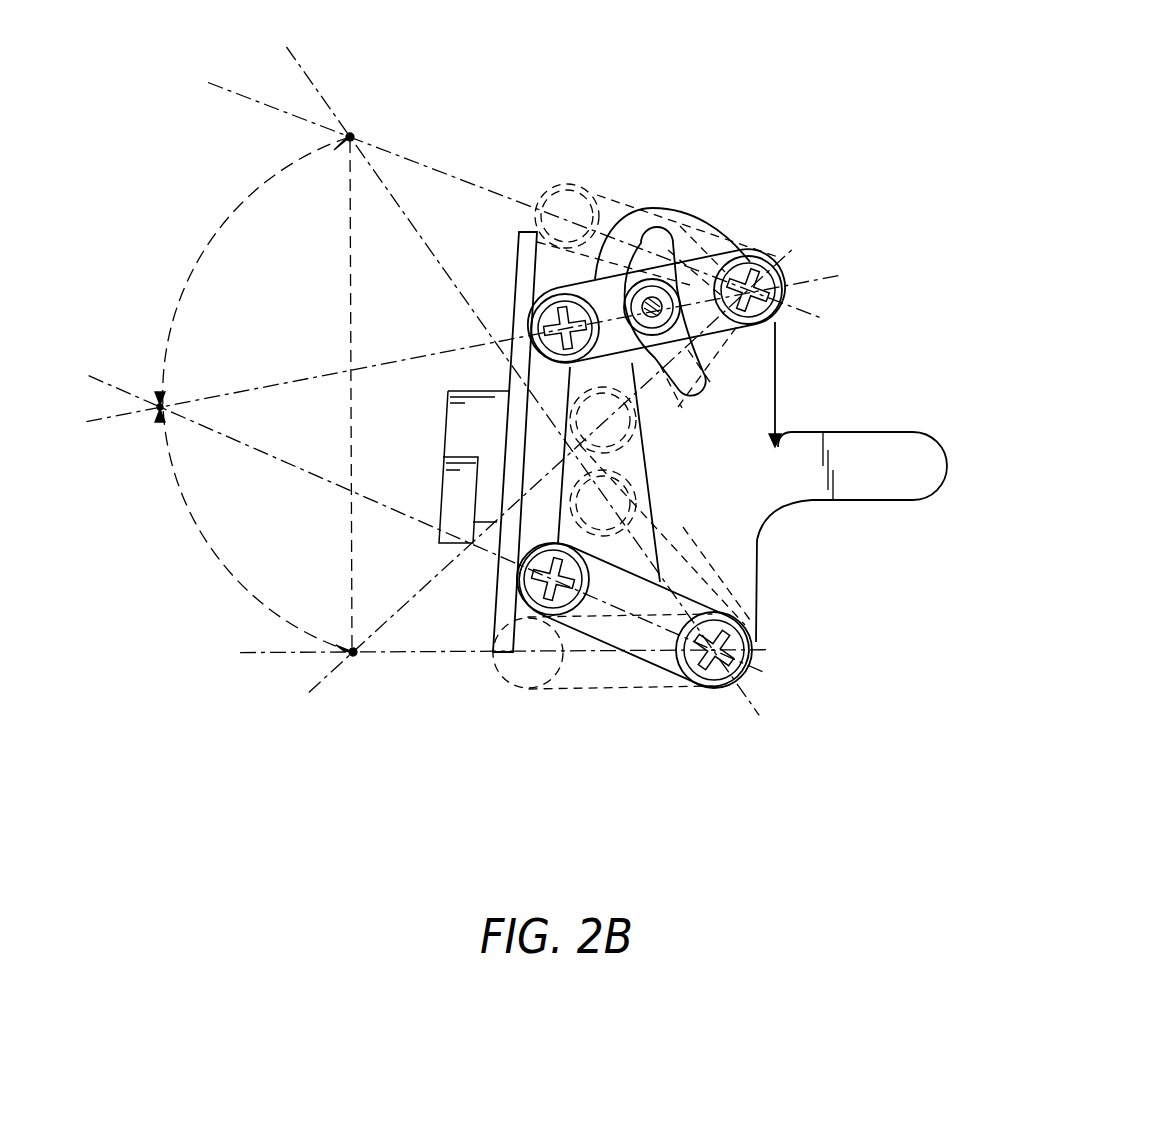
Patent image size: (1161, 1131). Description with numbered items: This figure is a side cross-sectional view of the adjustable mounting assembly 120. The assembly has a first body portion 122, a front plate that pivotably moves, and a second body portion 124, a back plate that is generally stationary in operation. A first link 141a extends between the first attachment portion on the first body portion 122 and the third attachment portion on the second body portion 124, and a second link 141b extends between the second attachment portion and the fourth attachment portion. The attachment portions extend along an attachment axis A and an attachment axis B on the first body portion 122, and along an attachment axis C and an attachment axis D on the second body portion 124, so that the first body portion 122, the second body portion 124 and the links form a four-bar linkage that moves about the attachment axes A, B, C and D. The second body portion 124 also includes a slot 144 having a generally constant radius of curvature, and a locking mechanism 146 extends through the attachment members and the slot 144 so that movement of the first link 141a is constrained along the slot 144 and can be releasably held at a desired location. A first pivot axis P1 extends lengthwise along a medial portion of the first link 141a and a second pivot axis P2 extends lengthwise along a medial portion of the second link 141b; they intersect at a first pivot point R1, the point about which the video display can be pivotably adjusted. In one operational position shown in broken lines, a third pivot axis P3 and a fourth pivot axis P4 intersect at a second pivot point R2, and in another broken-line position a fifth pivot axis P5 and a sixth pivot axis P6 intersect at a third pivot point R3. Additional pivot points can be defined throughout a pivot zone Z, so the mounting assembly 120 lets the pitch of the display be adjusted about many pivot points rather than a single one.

The adjustable mounting assembly 120 is at (742, 77).
The first body portion 122 is at (548, 383).
The second body portion 124 is at (783, 430).
The first link 141a is at (617, 192).
The second link 141b is at (576, 690).
The slot 144 is at (659, 249).
The locking mechanism 146 is at (757, 342).
The attachment axis A is at (563, 292).
The attachment axis B is at (546, 607).
The attachment axis C is at (755, 293).
The attachment axis D is at (711, 689).
The first pivot axis P1 is at (373, 363).
The second pivot axis P2 is at (367, 497).
The third pivot axis P3 is at (413, 597).
The fourth pivot axis P4 is at (388, 655).
The fifth pivot axis P5 is at (445, 176).
The sixth pivot axis P6 is at (393, 198).
The first pivot point R1 is at (157, 412).
The second pivot point R2 is at (354, 657).
The third pivot point R3 is at (352, 132).
The pivot zone Z is at (186, 294).